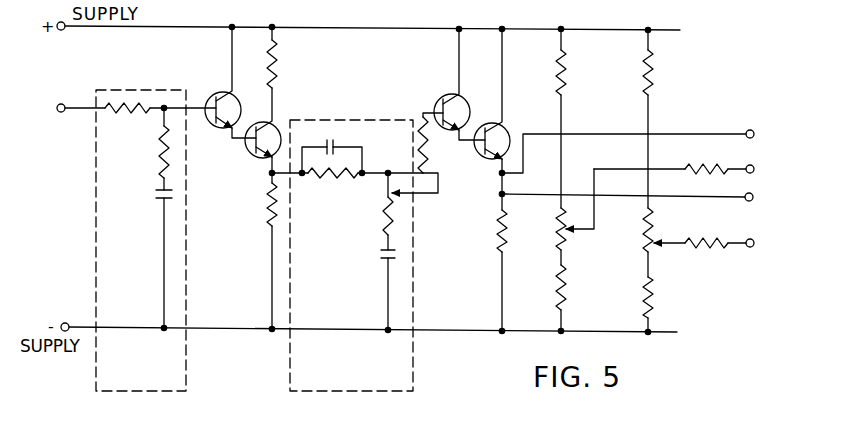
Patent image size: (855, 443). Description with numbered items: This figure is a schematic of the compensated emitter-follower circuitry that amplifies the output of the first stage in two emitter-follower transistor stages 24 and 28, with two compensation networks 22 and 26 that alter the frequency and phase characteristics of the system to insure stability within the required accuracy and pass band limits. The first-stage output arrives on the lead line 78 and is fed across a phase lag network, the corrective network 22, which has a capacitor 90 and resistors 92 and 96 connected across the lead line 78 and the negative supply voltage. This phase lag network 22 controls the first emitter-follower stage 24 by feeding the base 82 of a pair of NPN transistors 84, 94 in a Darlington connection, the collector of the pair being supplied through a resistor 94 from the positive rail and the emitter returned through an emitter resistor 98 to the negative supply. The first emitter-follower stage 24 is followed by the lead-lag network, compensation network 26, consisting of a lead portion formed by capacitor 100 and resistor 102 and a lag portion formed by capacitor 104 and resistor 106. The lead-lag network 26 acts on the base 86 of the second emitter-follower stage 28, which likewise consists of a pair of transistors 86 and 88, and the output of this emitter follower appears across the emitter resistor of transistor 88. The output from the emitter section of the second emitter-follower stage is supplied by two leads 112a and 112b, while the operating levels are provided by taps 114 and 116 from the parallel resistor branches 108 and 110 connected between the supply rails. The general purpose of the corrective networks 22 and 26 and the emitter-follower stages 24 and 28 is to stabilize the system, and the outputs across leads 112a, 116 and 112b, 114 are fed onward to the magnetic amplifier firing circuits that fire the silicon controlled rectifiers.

The phase lag network 22 is at (139, 173).
The first emitter-follower stage 24 is at (257, 197).
The lead-lag network 26 is at (358, 237).
The second emitter-follower stage 28 is at (478, 200).
The lead line 78 is at (66, 117).
The base 82 is at (215, 96).
The NPN transistor 84 is at (246, 98).
The base / transistor 86 is at (442, 97).
The transistor 88 is at (496, 94).
The capacitor 90 is at (168, 199).
The resistor 92 is at (172, 146).
The NPN transistor 94 is at (276, 126).
The resistor 96 is at (112, 92).
The emitter resistor 98 is at (268, 226).
The capacitor 100 is at (334, 149).
The resistor 102 is at (338, 180).
The capacitor 104 is at (384, 254).
The resistor 106 is at (395, 207).
The parallel resistor branch 108 is at (573, 82).
The parallel resistor branch 110 is at (661, 82).
The output lead 112a is at (751, 130).
The output lead 112b is at (753, 198).
The tap 114 is at (754, 245).
The tap 116 is at (754, 171).